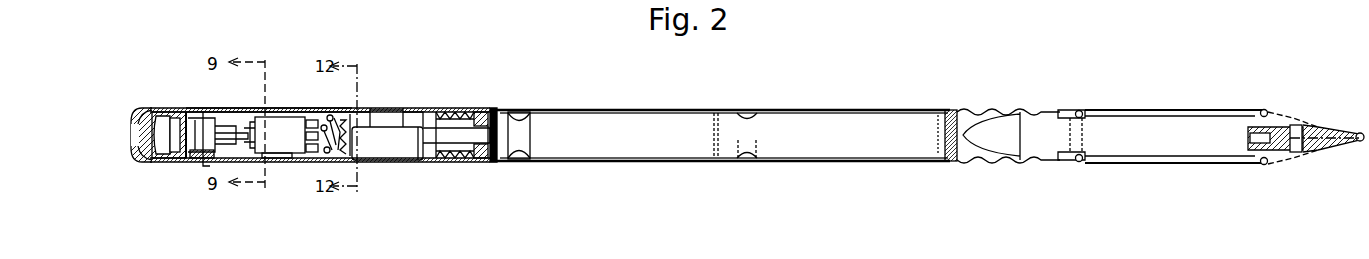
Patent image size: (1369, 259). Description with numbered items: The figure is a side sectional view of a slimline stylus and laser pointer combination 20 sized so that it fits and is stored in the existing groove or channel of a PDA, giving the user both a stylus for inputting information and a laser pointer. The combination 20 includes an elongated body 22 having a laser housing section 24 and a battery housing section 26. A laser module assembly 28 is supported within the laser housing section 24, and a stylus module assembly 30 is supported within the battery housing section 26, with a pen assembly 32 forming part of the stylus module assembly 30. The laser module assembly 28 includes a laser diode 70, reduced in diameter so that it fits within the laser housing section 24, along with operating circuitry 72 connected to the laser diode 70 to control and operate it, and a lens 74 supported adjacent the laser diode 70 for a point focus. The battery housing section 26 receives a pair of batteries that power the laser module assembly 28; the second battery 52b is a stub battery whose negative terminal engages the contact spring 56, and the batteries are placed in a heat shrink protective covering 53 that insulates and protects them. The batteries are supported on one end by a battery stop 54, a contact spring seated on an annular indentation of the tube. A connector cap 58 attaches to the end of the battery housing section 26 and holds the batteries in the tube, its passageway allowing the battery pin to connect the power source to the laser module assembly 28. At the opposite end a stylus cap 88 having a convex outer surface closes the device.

The stylus and laser pointer combination 20 is at (782, 100).
The elongated body 22 is at (611, 168).
The laser housing section 24 is at (418, 104).
The battery housing section 26 is at (903, 168).
The laser module assembly 28 is at (305, 104).
The stylus module assembly 30 is at (1277, 104).
The pen assembly 32 is at (1335, 104).
The second battery 52b is at (806, 150).
The protective covering 53 is at (517, 104).
The battery stop 54 is at (951, 106).
The contact spring 56 is at (611, 134).
The connector cap 58 is at (469, 106).
The laser diode 70 is at (200, 170).
The operating circuitry 72 is at (283, 112).
The lens 74 is at (161, 104).
The stylus cap 88 is at (138, 104).